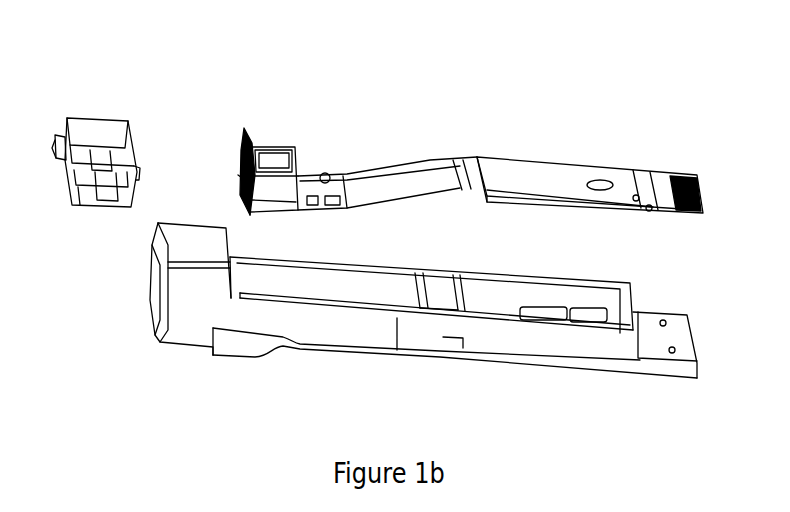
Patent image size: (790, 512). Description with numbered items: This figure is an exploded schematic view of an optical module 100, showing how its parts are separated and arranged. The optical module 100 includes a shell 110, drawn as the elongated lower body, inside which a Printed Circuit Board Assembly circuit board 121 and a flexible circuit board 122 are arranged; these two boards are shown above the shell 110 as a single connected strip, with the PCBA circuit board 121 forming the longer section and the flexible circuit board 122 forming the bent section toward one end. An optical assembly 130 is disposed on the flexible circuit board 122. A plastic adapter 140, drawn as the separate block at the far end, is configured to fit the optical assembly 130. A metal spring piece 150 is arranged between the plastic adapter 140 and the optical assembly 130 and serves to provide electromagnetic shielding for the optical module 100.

The optical module 100 is at (372, 86).
The shell 110 is at (516, 348).
The PCBA circuit board 121 is at (573, 180).
The flexible circuit board 122 is at (403, 183).
The optical assembly 130 is at (325, 172).
The plastic adapter 140 is at (105, 130).
The metal spring piece 150 is at (242, 152).